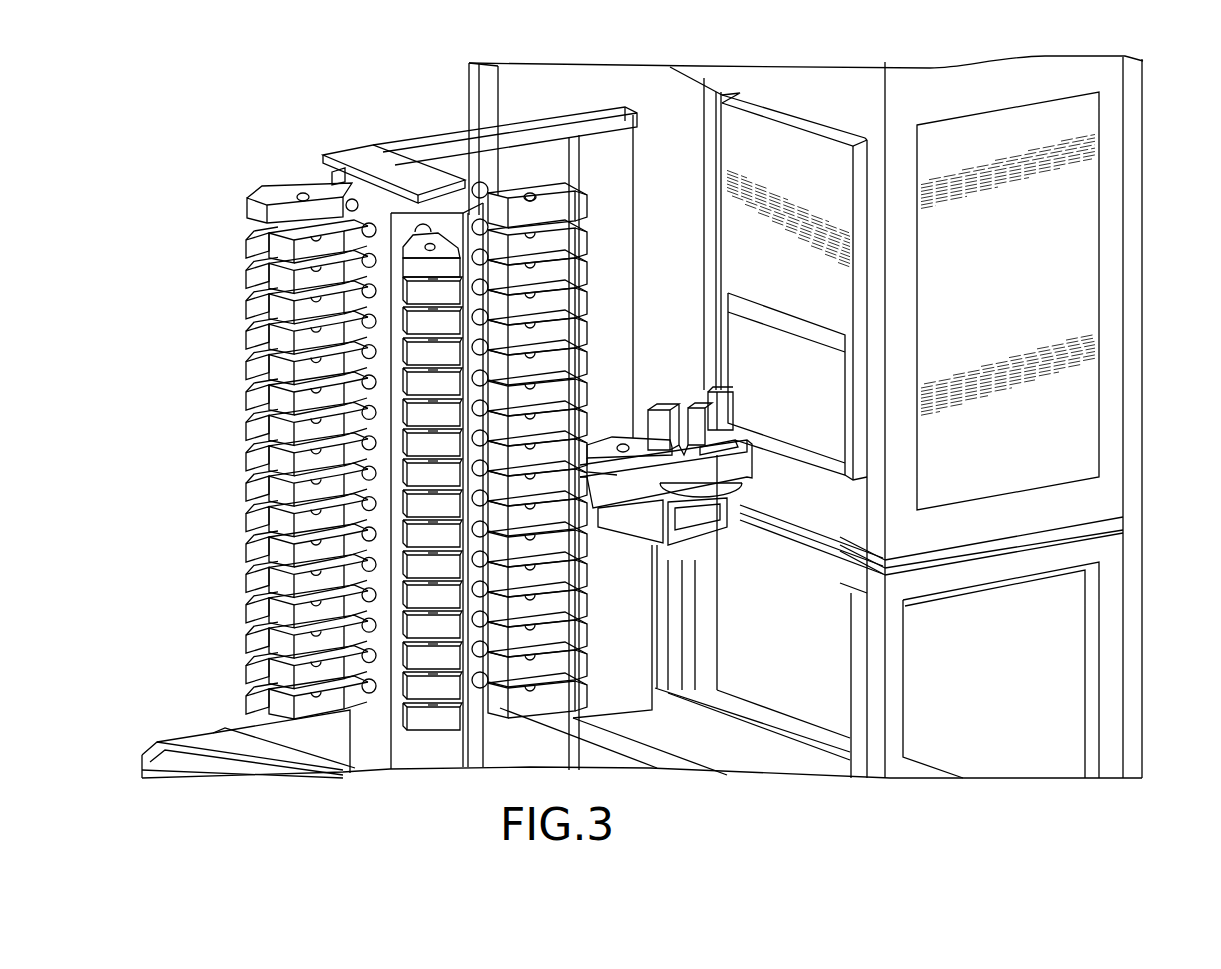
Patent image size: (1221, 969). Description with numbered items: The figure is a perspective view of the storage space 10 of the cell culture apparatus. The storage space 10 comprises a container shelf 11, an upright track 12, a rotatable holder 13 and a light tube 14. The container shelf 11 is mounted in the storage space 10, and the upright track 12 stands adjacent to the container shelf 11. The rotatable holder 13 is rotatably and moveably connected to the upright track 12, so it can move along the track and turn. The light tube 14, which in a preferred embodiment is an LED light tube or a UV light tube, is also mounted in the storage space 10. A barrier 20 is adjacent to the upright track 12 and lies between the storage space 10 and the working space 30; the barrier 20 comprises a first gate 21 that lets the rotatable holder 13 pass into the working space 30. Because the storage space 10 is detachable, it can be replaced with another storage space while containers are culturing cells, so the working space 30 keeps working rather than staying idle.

The storage space 10 is at (256, 160).
The container shelf 11 is at (340, 140).
The upright track 12 is at (615, 195).
The rotatable holder 13 is at (712, 418).
The light tube 14 is at (464, 88).
The barrier 20 is at (836, 132).
The first gate 21 is at (790, 350).
The working space 30 is at (1085, 255).